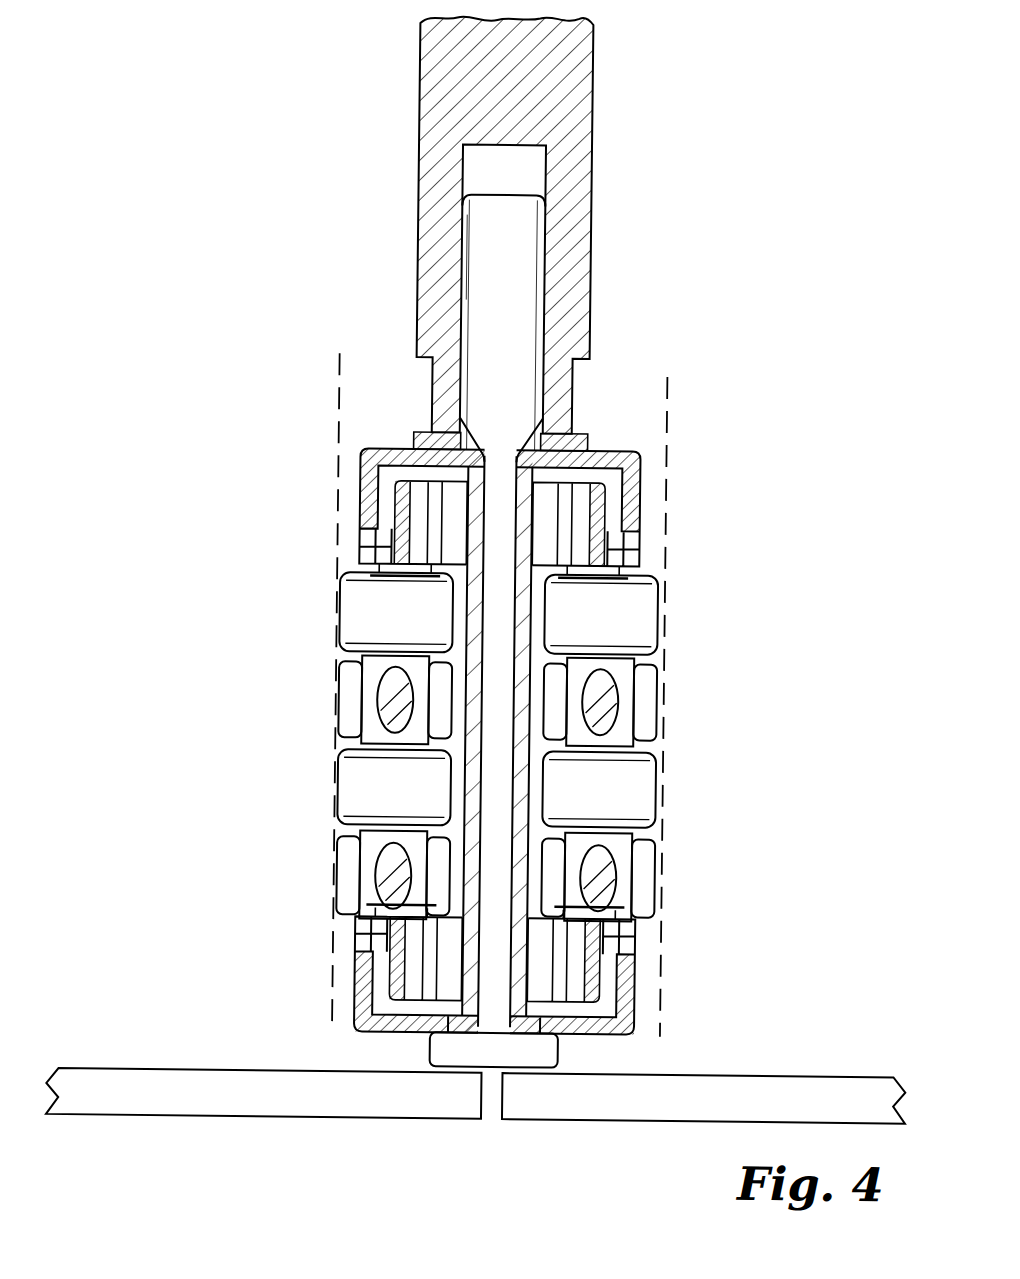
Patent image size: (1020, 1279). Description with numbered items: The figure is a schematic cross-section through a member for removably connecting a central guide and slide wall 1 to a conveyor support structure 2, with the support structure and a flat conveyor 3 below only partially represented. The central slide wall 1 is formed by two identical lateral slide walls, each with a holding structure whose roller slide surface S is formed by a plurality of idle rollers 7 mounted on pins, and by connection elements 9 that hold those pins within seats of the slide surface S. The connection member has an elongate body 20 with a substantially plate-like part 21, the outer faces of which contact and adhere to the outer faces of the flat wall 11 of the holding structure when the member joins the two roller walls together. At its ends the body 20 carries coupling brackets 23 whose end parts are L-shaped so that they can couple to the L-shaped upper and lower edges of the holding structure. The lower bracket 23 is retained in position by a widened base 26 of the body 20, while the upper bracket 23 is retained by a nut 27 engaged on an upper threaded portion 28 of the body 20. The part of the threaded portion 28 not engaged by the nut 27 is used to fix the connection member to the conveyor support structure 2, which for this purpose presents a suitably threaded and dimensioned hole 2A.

The central guide and slide wall 1 is at (501, 809).
The conveyor support structure 2 is at (455, 60).
The threaded hole 2A is at (455, 247).
The flat conveyor 3 is at (170, 1089).
The idle rollers 7 is at (626, 621).
The connection elements 9 is at (565, 543).
The flat wall 11 is at (484, 775).
The elongate body 20 is at (495, 861).
The plate-like part 21 is at (500, 810).
The coupling bracket 23 is at (600, 461).
The widened base 26 is at (449, 1059).
The nut 27 is at (430, 441).
The upper threaded portion 28 is at (526, 298).
The roller slide surface S is at (332, 367).